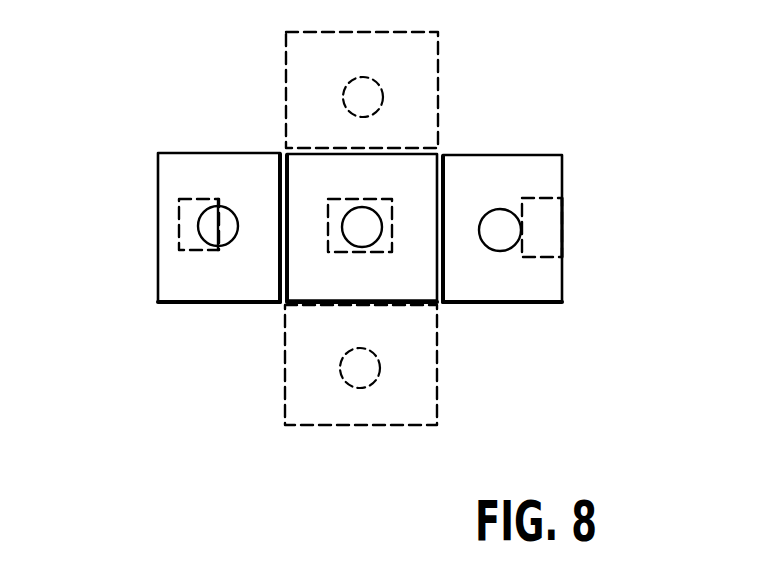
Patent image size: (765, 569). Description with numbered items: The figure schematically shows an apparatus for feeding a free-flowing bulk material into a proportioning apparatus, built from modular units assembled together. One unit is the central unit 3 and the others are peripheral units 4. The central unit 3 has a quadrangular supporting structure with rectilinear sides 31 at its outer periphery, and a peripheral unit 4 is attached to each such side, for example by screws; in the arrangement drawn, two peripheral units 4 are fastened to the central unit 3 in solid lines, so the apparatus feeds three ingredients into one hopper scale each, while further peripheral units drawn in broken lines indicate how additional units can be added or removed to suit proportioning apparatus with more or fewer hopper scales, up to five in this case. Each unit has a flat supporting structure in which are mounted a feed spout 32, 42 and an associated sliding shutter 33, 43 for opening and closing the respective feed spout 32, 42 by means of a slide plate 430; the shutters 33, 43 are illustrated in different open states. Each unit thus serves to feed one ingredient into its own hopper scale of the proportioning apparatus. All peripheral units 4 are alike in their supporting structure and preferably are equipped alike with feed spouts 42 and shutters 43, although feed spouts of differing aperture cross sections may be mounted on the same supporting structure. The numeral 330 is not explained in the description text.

The central unit 3 is at (443, 297).
The rectilinear side 31 is at (288, 280).
The feed spout 32 is at (345, 240).
The sliding shutter 33 is at (382, 238).
The recess in base plate 330 is at (395, 202).
The peripheral unit 4 is at (225, 152).
The feed spout 42 is at (238, 237).
The sliding shutter 43 is at (193, 245).
The slide plate 430 is at (180, 223).